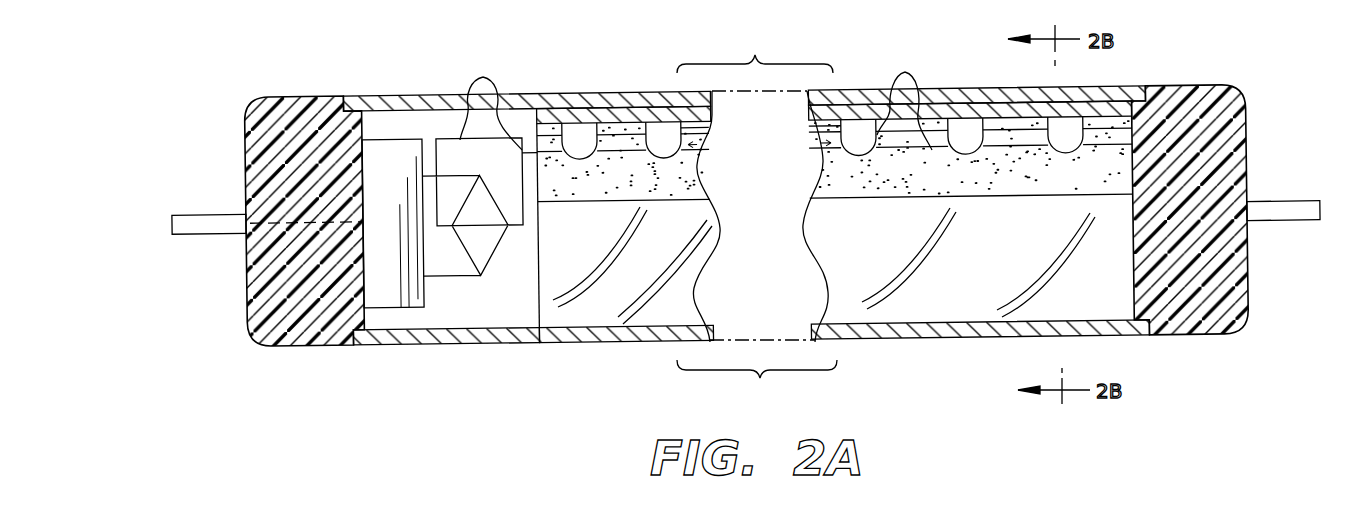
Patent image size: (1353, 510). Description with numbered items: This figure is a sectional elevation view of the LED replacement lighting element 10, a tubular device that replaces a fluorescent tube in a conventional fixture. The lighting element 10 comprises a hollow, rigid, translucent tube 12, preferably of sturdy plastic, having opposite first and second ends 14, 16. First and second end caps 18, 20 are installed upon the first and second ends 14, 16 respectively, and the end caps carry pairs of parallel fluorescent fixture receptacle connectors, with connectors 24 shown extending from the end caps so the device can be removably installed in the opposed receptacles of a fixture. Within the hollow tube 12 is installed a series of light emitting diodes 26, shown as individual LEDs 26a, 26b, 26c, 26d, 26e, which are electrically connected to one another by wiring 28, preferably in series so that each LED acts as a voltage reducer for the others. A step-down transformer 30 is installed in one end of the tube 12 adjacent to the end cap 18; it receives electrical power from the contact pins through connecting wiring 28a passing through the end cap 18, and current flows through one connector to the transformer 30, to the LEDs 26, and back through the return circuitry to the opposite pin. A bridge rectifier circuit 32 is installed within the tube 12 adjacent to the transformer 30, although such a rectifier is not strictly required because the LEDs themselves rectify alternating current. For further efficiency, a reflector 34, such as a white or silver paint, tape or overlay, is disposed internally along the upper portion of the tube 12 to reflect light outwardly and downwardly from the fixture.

The LED replacement lighting element 10 is at (460, 384).
The tube 12 is at (613, 348).
The first end 14 is at (377, 348).
The second end 16 is at (1135, 337).
The first end cap 18 is at (315, 348).
The second end cap 20 is at (1205, 337).
The connectors 24 is at (203, 234).
The light emitting diodes 26 is at (812, 141).
The individual LED 26a is at (577, 162).
The individual LED 26b is at (655, 162).
The individual LED 26c is at (852, 161).
The individual LED 26d is at (962, 159).
The individual LED 26e is at (1063, 157).
The wiring 28 is at (696, 99).
The connecting wiring 28a is at (281, 222).
The step-down transformer 30 is at (400, 178).
The bridge rectifier circuit 32 is at (500, 253).
The reflector 34 is at (642, 92).